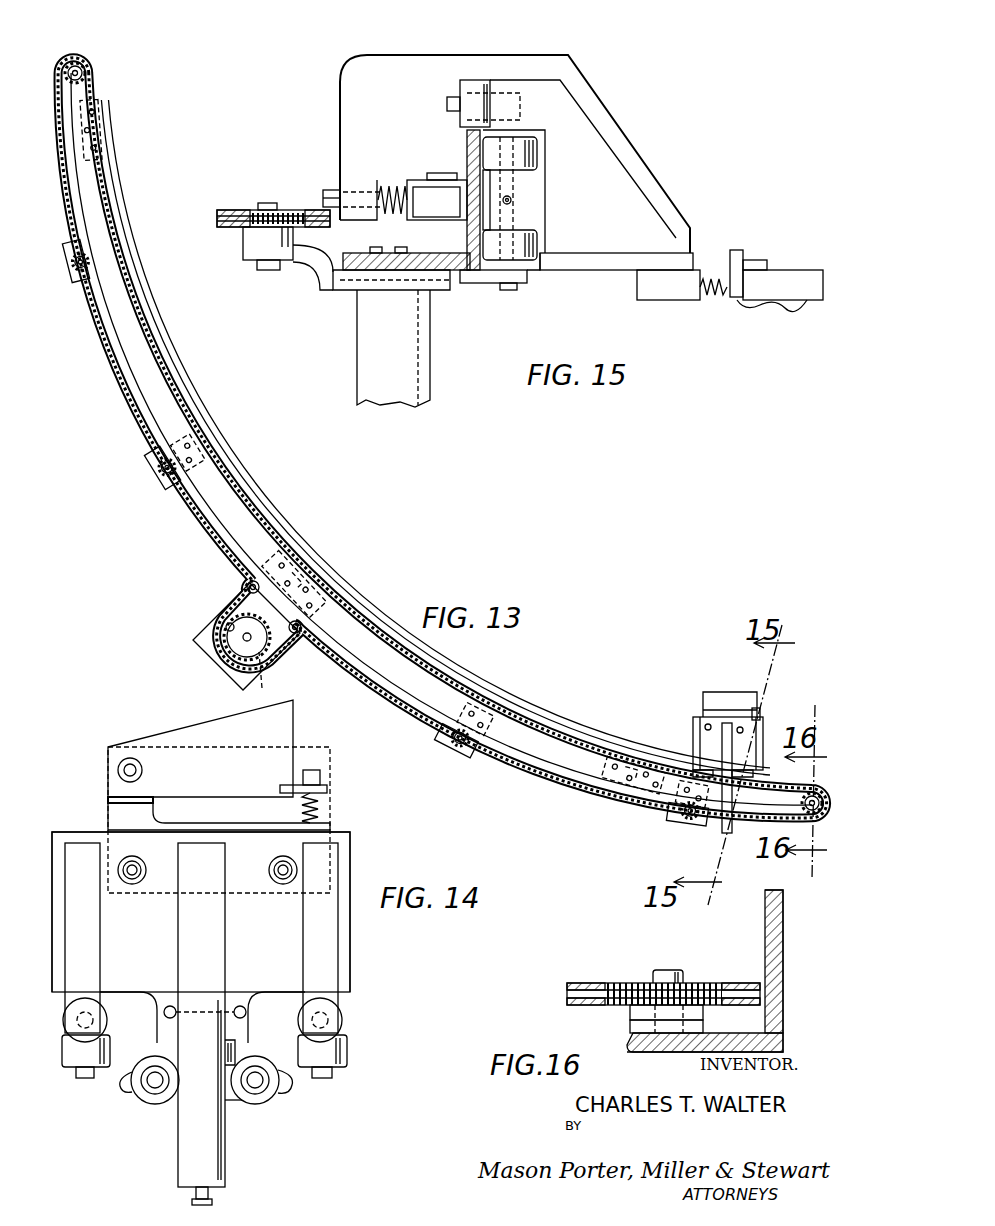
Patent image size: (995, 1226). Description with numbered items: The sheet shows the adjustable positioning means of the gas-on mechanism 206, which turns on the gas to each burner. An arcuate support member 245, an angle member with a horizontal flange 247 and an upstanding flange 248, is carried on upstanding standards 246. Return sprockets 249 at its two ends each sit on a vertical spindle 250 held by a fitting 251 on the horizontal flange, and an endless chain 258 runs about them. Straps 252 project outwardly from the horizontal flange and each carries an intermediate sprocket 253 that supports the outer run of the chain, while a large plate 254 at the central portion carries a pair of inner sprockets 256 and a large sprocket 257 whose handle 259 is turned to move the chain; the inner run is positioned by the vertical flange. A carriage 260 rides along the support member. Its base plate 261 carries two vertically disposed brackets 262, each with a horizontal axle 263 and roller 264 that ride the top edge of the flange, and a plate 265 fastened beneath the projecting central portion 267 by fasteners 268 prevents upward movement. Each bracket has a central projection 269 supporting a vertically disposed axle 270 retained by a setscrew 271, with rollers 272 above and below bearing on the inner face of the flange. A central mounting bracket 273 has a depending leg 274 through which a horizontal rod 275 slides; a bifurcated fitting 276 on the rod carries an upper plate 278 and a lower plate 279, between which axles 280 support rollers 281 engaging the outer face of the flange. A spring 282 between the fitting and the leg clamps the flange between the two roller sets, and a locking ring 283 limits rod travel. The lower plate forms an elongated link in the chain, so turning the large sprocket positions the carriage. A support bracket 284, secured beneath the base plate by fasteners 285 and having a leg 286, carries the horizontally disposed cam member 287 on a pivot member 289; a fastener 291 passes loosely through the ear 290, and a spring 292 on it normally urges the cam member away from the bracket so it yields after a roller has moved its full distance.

In FIG. 13, the gas-on mechanism 206 is at (110, 136).
In FIG. 13, the arcuate support member 245 is at (165, 403).
In FIG. 15, the arcuate support member 245 is at (478, 272).
In FIG. 16, the arcuate support member 245 is at (786, 1042).
In FIG. 13, the upstanding standards 246 is at (100, 158).
In FIG. 15, the upstanding standards 246 is at (420, 402).
In FIG. 15, the horizontal flange 247 is at (352, 277).
In FIG. 16, the horizontal flange 247 is at (640, 1053).
In FIG. 15, the upstanding flange 248 is at (473, 272).
In FIG. 16, the upstanding flange 248 is at (765, 925).
In FIG. 13, the return sprockets 249 is at (82, 64).
In FIG. 16, the return sprockets 249 is at (633, 1004).
In FIG. 16, the vertical spindle 250 is at (680, 972).
In FIG. 16, the fitting 251 is at (630, 1027).
In FIG. 13, the straps 252 is at (62, 276).
In FIG. 13, the intermediate sprocket 253 is at (88, 262).
In FIG. 13, the large plate 254 is at (196, 641).
In FIG. 13, the inner sprockets 256 is at (249, 583).
In FIG. 13, the large sprocket 257 is at (271, 677).
In FIG. 13, the endless chain 258 is at (428, 720).
In FIG. 15, the endless chain 258 is at (222, 208).
In FIG. 16, the endless chain 258 is at (585, 986).
In FIG. 13, the handle 259 is at (230, 623).
In FIG. 13, the carriage 260 is at (691, 713).
In FIG. 15, the carriage 260 is at (547, 277).
In FIG. 14, the carriage 260 is at (357, 989).
In FIG. 15, the base plate 261 is at (613, 270).
In FIG. 14, the base plate 261 is at (350, 870).
In FIG. 15, the vertically disposed brackets 262 is at (640, 158).
In FIG. 14, the vertically disposed brackets 262 is at (100, 960).
In FIG. 15, the horizontal axle 263 is at (450, 100).
In FIG. 14, the horizontal axle 263 is at (88, 1078).
In FIG. 15, the roller 264 is at (477, 84).
In FIG. 14, the roller 264 is at (348, 1050).
In FIG. 15, the plate 265 is at (490, 283).
In FIG. 14, the plate 265 is at (236, 1048).
In FIG. 14, the projecting central portion 267 is at (176, 1010).
In FIG. 15, the fasteners 268 is at (512, 290).
In FIG. 15, the central projection 269 is at (530, 198).
In FIG. 15, the vertically disposed axle 270 is at (520, 214).
In FIG. 15, the setscrew 271 is at (512, 198).
In FIG. 15, the rollers 272 is at (535, 150).
In FIG. 14, the rollers 272 is at (107, 1020).
In FIG. 15, the central mounting bracket 273 is at (567, 60).
In FIG. 14, the central mounting bracket 273 is at (212, 960).
In FIG. 15, the depending leg 274 is at (362, 222).
In FIG. 15, the horizontal rod 275 is at (332, 190).
In FIG. 14, the horizontal rod 275 is at (212, 1190).
In FIG. 15, the bifurcated fitting 276 is at (398, 242).
In FIG. 15, the upper plate 278 is at (420, 180).
In FIG. 14, the upper plate 278 is at (240, 1104).
In FIG. 15, the lower plate 279 is at (418, 290).
In FIG. 14, the lower plate 279 is at (292, 1088).
In FIG. 15, the axles 280 is at (442, 173).
In FIG. 15, the rollers 281 is at (436, 202).
In FIG. 14, the rollers 281 is at (152, 1104).
In FIG. 15, the spring 282 is at (388, 186).
In FIG. 15, the locking ring 283 is at (325, 195).
In FIG. 14, the locking ring 283 is at (192, 1201).
In FIG. 15, the support bracket 284 is at (658, 300).
In FIG. 14, the support bracket 284 is at (108, 812).
In FIG. 14, the fasteners 285 is at (133, 885).
In FIG. 14, the leg 286 is at (108, 798).
In FIG. 13, the cam member 287 is at (737, 700).
In FIG. 15, the cam member 287 is at (793, 272).
In FIG. 14, the cam member 287 is at (295, 722).
In FIG. 15, the pivot member 289 is at (757, 260).
In FIG. 14, the pivot member 289 is at (133, 758).
In FIG. 15, the ear 290 is at (735, 255).
In FIG. 14, the ear 290 is at (328, 789).
In FIG. 15, the fastener 291 is at (765, 305).
In FIG. 14, the fastener 291 is at (320, 772).
In FIG. 15, the spring 292 is at (712, 298).
In FIG. 14, the spring 292 is at (320, 808).